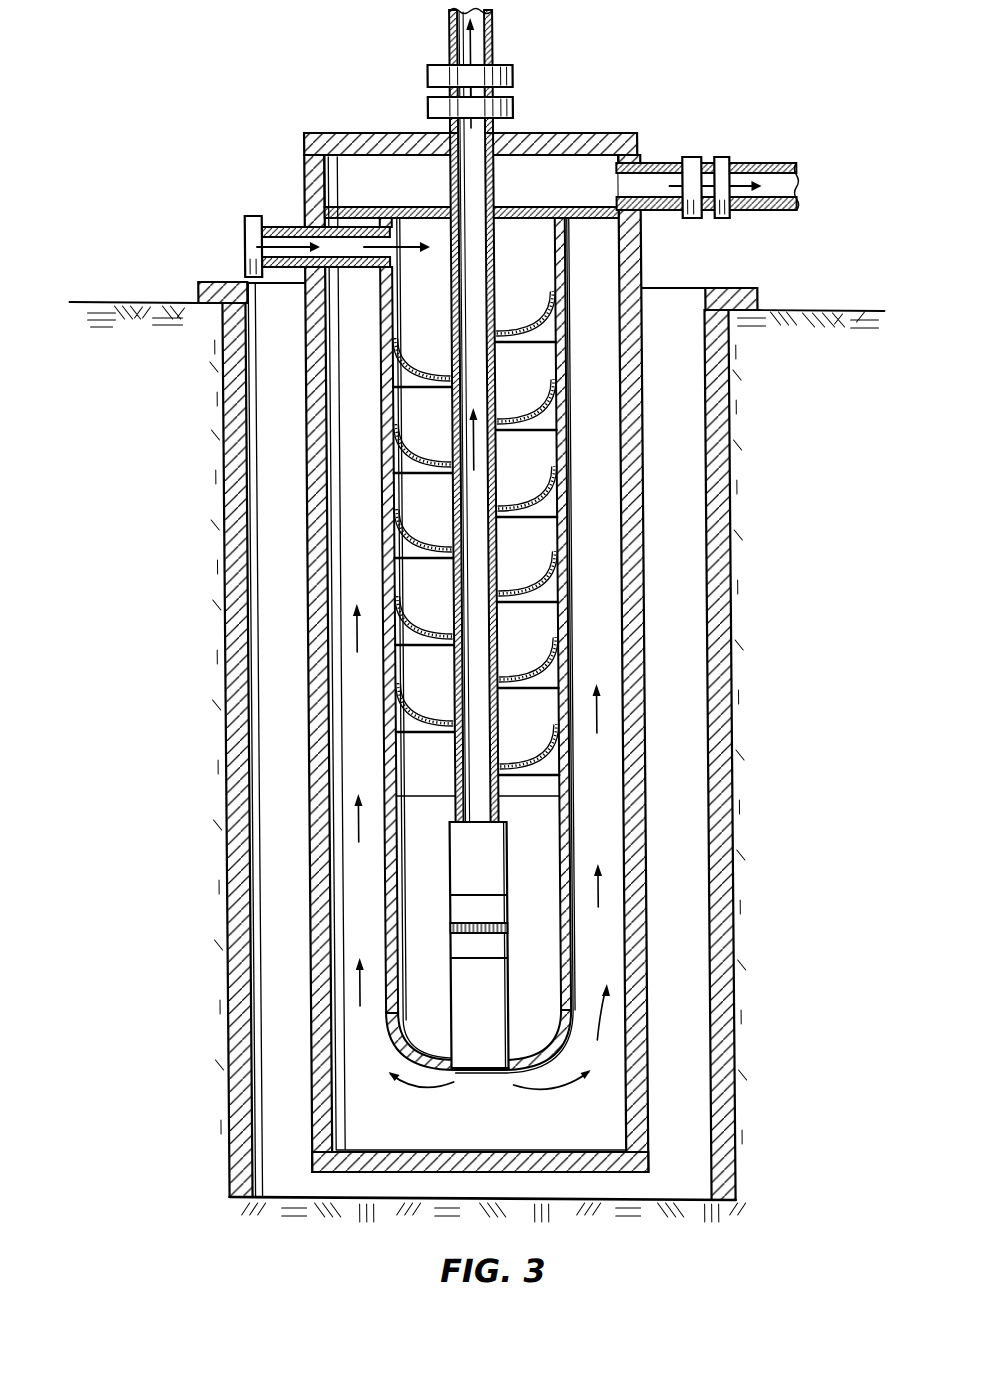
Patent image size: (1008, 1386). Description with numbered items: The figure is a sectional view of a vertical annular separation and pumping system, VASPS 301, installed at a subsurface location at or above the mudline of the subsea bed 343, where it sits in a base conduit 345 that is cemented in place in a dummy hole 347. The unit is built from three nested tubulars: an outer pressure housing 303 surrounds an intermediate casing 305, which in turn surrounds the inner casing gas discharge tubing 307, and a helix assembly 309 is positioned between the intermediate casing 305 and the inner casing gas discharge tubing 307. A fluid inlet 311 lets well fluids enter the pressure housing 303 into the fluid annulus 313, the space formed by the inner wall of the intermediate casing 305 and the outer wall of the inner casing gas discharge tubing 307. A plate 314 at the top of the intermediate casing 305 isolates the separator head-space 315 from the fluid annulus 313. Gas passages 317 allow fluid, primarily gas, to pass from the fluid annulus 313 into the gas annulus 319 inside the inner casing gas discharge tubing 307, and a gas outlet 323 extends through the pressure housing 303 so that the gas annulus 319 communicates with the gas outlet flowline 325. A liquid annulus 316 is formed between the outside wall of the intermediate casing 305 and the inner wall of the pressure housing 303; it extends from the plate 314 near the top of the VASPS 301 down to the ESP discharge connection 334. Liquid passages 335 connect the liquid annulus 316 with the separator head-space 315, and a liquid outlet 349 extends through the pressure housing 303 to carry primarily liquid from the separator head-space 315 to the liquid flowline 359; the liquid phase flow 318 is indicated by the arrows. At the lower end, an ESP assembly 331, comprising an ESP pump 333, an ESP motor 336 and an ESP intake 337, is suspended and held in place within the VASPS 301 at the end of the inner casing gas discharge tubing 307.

The VASPS 301 is at (445, 631).
The pressure housing 303 is at (633, 613).
The intermediate casing 305 is at (562, 404).
The inner casing gas discharge tubing 307 is at (494, 368).
The helix assembly 309 is at (399, 553).
The fluid inlet 311 is at (250, 221).
The fluid annulus 313 is at (526, 446).
The plate 314 is at (526, 203).
The separator head-space 315 is at (407, 166).
The liquid annulus 316 is at (358, 407).
The gas passages 317 is at (555, 313).
The liquid phase flow 318 is at (591, 712).
The gas annulus 319 is at (473, 536).
The gas outlet 323 is at (506, 101).
The gas outlet flowline 325 is at (494, 38).
The ESP assembly 331 is at (501, 837).
The ESP pump 333 is at (486, 977).
The ESP discharge connection 334 is at (481, 1066).
The liquid passages 335 is at (352, 210).
The ESP motor 336 is at (486, 861).
The ESP intake 337 is at (501, 927).
The subsea bed 343 is at (150, 302).
The base conduit 345 is at (217, 597).
The dummy hole 347 is at (278, 1215).
The liquid outlet 349 is at (692, 158).
The liquid flowline 359 is at (783, 168).